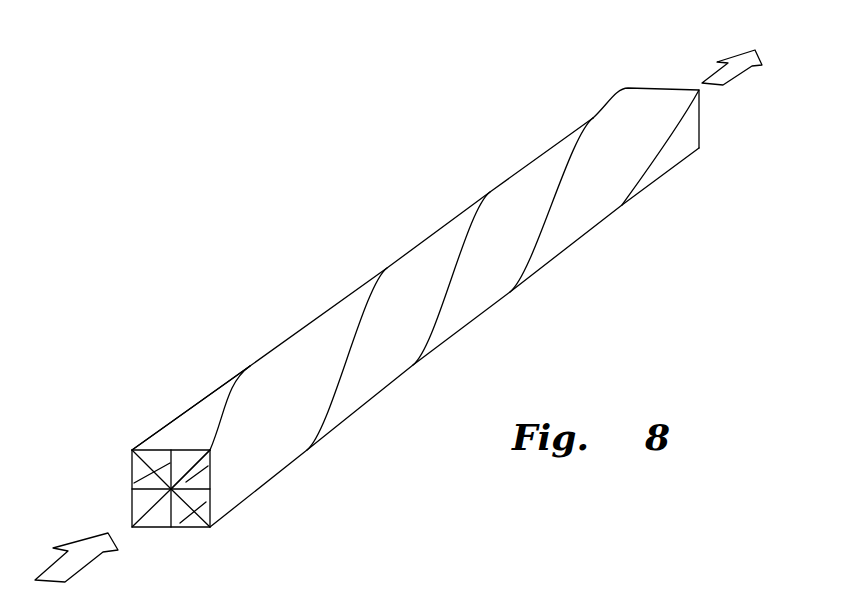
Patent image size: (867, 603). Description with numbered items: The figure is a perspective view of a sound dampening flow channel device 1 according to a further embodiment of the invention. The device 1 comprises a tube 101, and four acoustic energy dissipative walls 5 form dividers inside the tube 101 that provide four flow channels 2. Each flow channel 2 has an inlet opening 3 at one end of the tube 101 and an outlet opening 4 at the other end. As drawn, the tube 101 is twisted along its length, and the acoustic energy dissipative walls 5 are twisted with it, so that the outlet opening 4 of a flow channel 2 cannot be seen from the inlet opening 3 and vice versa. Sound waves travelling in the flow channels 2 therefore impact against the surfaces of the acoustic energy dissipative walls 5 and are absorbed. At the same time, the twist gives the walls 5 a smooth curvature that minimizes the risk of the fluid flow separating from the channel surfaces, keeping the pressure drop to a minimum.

The sound dampening flow channel device 1 is at (390, 233).
The flow channel 2 is at (135, 505).
The inlet opening 3 is at (184, 468).
The outlet opening 4 is at (648, 86).
The acoustic energy dissipative wall 5 is at (165, 477).
The tube 101 is at (170, 432).